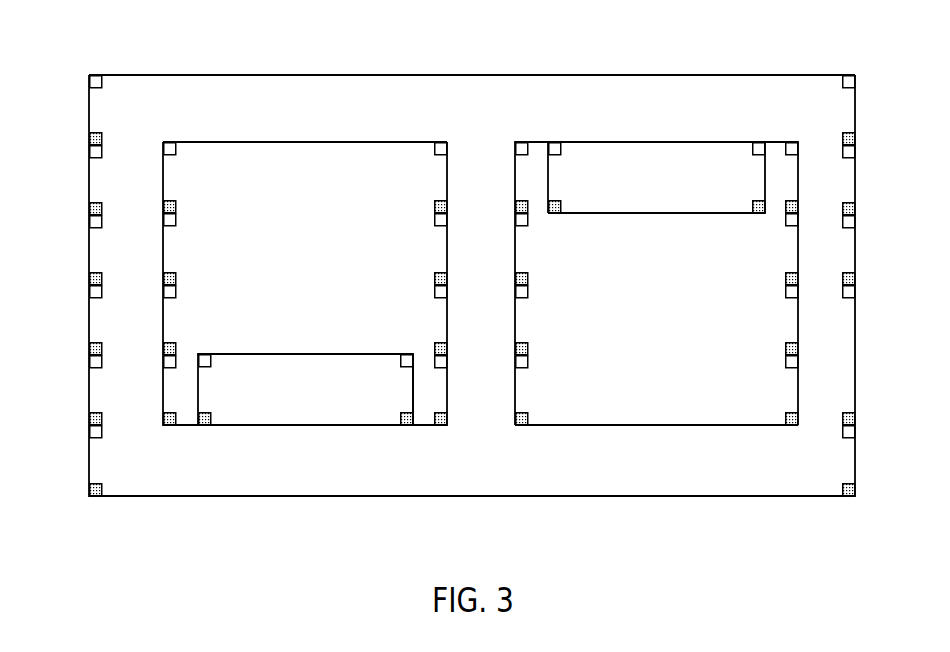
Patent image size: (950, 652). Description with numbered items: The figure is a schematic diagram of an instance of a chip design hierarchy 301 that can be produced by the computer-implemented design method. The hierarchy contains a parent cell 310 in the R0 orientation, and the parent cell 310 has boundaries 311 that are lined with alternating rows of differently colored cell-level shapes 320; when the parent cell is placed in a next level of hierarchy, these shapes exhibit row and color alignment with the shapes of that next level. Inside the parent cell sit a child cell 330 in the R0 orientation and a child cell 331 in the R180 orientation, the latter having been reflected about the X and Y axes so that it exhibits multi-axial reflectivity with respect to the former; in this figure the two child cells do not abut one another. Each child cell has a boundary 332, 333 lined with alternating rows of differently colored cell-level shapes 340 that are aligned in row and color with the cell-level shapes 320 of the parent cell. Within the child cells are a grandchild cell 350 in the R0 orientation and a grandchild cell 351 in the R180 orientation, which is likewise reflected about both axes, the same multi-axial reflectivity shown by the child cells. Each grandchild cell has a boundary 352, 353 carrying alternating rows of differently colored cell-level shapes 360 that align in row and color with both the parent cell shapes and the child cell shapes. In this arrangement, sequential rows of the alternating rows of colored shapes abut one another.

The chip design hierarchy 301 is at (190, 512).
The parent cell 310 is at (447, 256).
The boundaries 311 is at (305, 73).
The cell-level shapes 320 is at (92, 209).
The child cell 330 is at (305, 253).
The child cell 331 is at (656, 316).
The boundary 332 is at (410, 140).
The boundary 333 is at (569, 431).
The cell-level shapes 340 is at (168, 279).
The grandchild cell 350 is at (305, 412).
The grandchild cell 351 is at (656, 156).
The boundary 352 is at (409, 393).
The boundary 353 is at (552, 176).
The cell-level shapes 360 is at (207, 357).